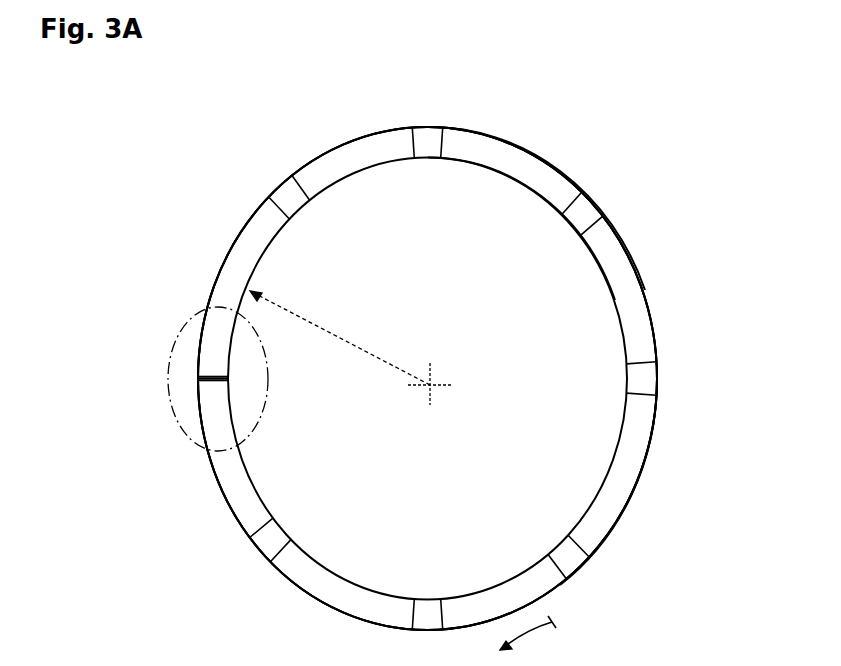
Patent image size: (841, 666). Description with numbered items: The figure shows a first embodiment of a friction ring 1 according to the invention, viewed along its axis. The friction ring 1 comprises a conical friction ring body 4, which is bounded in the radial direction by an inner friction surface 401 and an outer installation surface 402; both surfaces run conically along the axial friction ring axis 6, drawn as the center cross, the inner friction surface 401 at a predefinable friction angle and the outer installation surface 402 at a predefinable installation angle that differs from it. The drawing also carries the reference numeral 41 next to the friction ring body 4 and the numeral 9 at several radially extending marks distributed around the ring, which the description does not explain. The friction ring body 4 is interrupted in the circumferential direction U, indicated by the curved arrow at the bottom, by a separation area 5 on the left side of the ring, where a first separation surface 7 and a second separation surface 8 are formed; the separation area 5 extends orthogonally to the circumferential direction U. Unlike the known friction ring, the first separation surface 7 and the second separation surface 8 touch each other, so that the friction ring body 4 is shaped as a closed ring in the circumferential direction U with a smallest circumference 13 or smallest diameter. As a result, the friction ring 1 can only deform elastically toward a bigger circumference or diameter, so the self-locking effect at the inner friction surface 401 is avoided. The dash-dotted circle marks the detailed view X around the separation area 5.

The friction ring 1 is at (672, 167).
The conical friction ring body 4 is at (355, 142).
The ring body 41 is at (355, 142).
The outer installation surface 402 is at (503, 140).
The inner friction surface 401 is at (528, 193).
The smallest circumference 13 is at (645, 465).
The slots 9 is at (425, 145).
The separation area 5 is at (195, 375).
The first separation surface 7 is at (215, 380).
The second separation surface 8 is at (212, 385).
The friction ring axis 6 is at (432, 388).
The detailed view X is at (175, 413).
The circumferential direction U is at (528, 641).